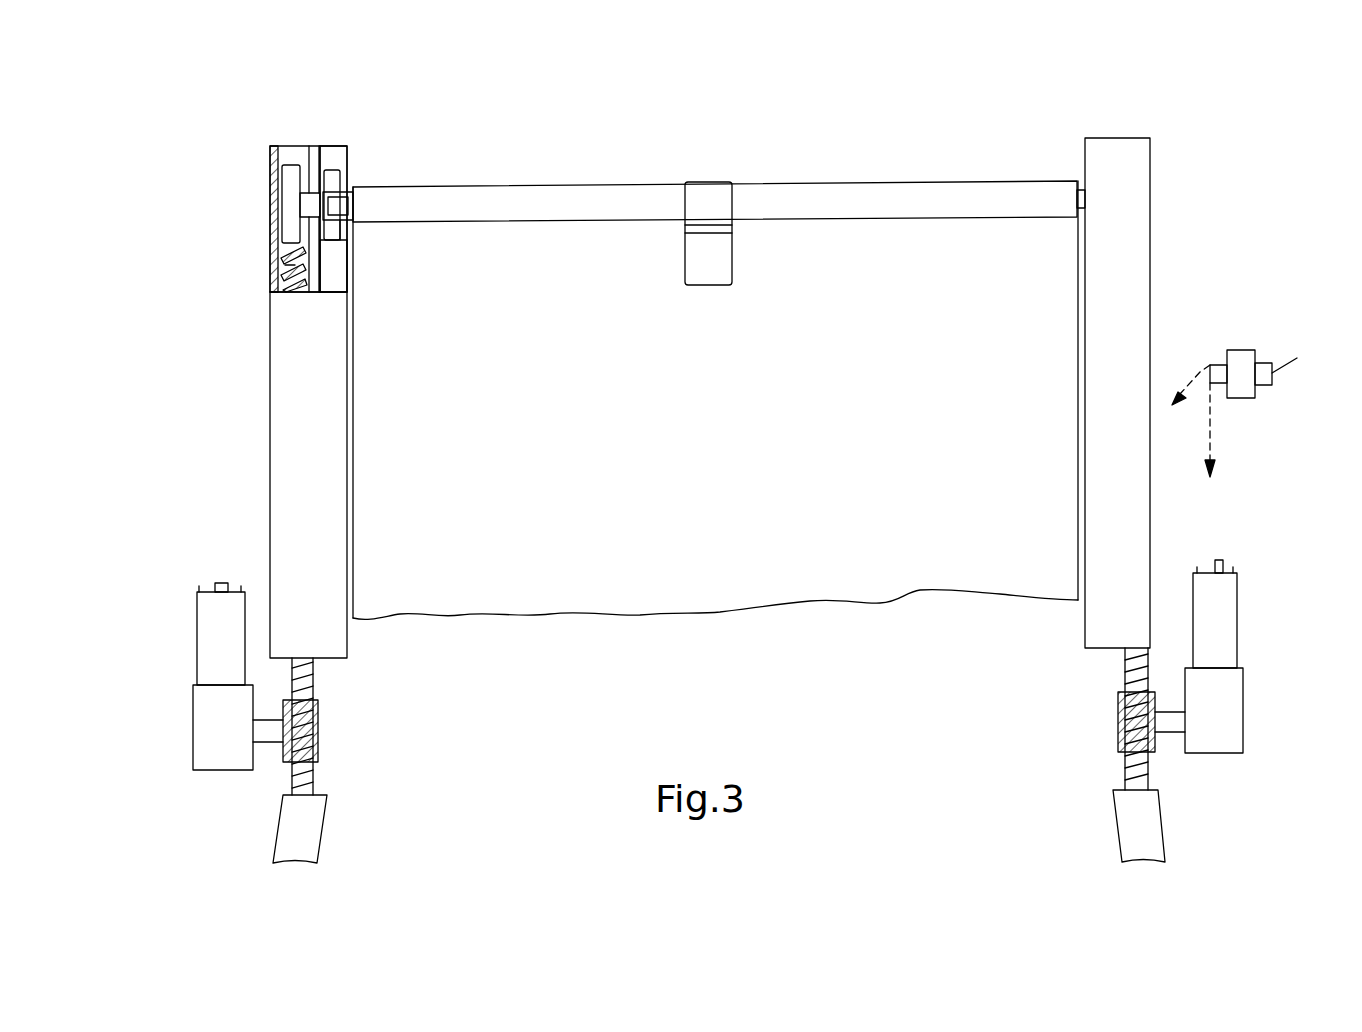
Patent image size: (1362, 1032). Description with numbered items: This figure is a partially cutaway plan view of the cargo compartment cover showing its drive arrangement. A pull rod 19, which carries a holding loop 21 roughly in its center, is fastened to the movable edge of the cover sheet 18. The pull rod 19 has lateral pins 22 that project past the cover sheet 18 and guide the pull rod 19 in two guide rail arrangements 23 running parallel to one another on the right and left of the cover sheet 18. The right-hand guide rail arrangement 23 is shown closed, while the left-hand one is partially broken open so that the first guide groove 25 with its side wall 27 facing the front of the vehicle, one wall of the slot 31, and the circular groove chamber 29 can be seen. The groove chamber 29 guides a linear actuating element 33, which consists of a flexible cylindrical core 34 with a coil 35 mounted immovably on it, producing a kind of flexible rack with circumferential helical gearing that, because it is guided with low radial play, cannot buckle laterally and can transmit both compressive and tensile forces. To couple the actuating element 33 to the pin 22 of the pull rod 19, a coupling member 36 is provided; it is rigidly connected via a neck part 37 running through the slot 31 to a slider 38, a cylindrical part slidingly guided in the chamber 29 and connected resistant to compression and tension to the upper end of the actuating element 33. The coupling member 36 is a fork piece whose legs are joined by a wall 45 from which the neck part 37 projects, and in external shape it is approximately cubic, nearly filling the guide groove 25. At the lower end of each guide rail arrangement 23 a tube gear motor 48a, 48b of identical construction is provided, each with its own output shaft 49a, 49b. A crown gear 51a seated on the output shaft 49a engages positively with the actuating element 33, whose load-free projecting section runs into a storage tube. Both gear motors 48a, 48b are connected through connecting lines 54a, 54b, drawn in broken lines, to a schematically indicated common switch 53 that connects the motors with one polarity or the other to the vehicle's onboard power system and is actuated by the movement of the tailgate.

The cover sheet 18 is at (712, 451).
The pull rod 19 is at (784, 190).
The holding loop 21 is at (732, 268).
The lateral pin 22 is at (347, 203).
The guide rail arrangement 23 is at (252, 116).
The first guide groove 25 is at (348, 148).
The side wall 27 is at (327, 157).
The circular groove chamber 29 is at (288, 157).
The slot 31 is at (310, 293).
The linear actuating element 33 is at (325, 677).
The flexible cylindrical core 34 is at (277, 272).
The coil 35 is at (277, 258).
The coupling member 36 is at (334, 258).
The neck part 37 is at (310, 200).
The slider 38 is at (287, 200).
The wall 45 is at (343, 227).
The gear motor 48a is at (178, 722).
The gear motor 48b is at (1262, 692).
The output shaft 49a is at (268, 732).
The output shaft 49b is at (1170, 725).
The crown gear 51a is at (320, 732).
The switch 53 is at (1240, 350).
The connecting line 54a is at (1195, 375).
The connecting line 54b is at (1212, 432).